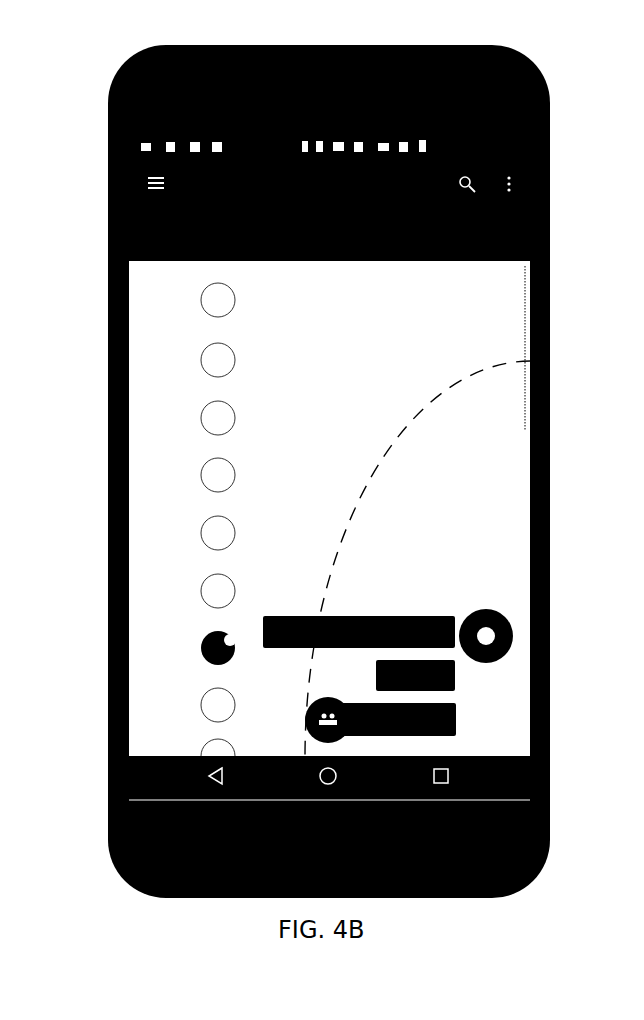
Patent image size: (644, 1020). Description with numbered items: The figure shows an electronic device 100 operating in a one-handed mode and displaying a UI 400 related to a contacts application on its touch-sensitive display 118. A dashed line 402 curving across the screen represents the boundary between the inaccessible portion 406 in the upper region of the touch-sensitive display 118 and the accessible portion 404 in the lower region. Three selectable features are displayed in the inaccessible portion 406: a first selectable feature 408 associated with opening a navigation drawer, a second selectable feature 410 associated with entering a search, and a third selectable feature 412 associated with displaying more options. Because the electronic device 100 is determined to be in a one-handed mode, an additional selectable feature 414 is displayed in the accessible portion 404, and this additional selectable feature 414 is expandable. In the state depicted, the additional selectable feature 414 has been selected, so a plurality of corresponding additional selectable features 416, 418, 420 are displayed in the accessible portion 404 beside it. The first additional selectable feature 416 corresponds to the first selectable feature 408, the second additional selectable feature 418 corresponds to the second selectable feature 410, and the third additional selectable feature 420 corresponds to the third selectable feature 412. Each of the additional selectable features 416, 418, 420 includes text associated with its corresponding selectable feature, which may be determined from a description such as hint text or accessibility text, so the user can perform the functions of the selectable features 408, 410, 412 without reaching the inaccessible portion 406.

The electronic device 100 is at (141, 50).
The touch-sensitive display 118 is at (138, 310).
The UI 400 is at (490, 268).
The dashed line 402 is at (417, 411).
The accessible portion 404 is at (451, 562).
The inaccessible portion 406 is at (430, 314).
The first selectable feature 408 is at (141, 176).
The second selectable feature 410 is at (465, 176).
The third selectable feature 412 is at (504, 177).
The additional selectable feature 414 is at (506, 627).
The first additional selectable feature 416 is at (447, 608).
The second additional selectable feature 418 is at (447, 658).
The third additional selectable feature 420 is at (447, 705).